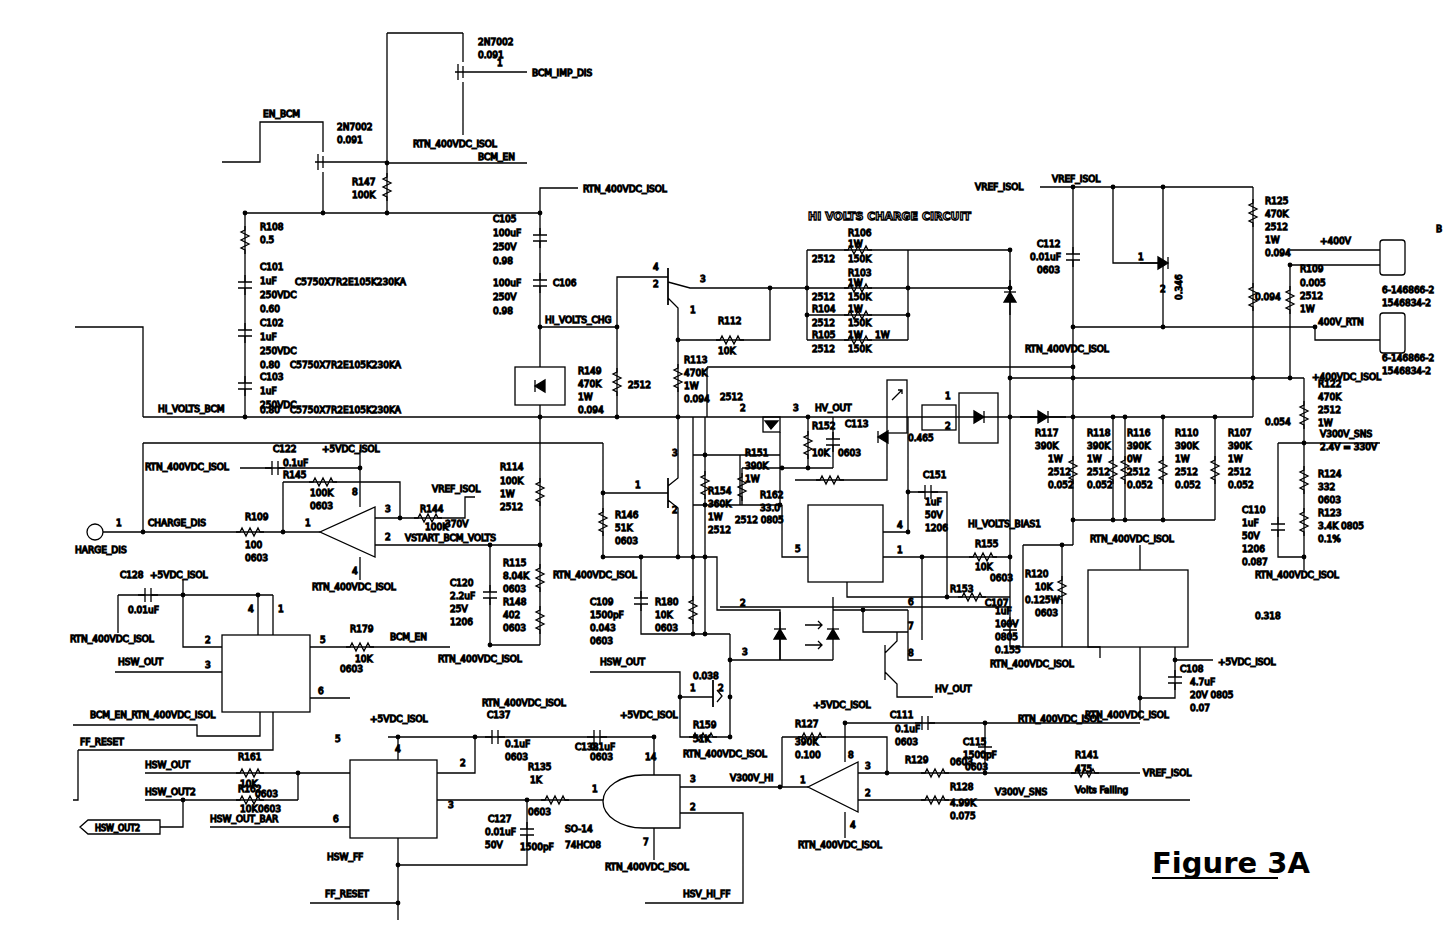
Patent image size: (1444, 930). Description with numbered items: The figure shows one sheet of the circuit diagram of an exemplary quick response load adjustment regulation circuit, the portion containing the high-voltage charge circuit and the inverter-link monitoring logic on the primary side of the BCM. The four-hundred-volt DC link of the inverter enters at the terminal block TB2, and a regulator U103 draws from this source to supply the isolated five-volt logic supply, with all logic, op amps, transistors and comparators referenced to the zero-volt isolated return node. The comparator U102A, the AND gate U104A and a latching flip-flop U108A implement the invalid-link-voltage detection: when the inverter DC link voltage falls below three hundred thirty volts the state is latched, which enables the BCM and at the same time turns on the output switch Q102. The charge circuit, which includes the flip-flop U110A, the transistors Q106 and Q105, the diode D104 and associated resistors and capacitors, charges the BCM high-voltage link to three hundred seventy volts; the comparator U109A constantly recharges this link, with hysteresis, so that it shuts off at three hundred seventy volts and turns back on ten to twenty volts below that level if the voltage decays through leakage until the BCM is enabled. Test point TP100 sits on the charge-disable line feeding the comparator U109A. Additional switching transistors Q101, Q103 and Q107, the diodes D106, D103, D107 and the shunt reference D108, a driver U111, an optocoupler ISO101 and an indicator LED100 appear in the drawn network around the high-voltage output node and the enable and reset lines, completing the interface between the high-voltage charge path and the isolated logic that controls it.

The transistor Q101 is at (308, 160).
The transistor Q103 is at (447, 73).
The charge circuit transistor Q105 is at (691, 272).
The charge circuit transistor Q106 is at (628, 468).
The output switch Q102 is at (760, 405).
The MOSFET Q107 is at (750, 692).
The diode D106 is at (505, 380).
The diode D103 is at (962, 424).
The charge circuit diode D104 is at (980, 282).
The diode D107 is at (1043, 409).
The shunt regulator D108 is at (1161, 245).
The LED LED100 is at (879, 406).
The gate driver U111 is at (810, 561).
The optocoupler ISO101 is at (807, 652).
The AND gate U104A is at (627, 789).
The flip-flop U108A is at (373, 788).
The charge circuit logic device U110A is at (279, 659).
The comparator U109A is at (329, 537).
The comparator U102A is at (807, 787).
The regulator U103 is at (1165, 608).
The terminal block TB2 is at (1370, 289).
The test point TP100 is at (99, 523).